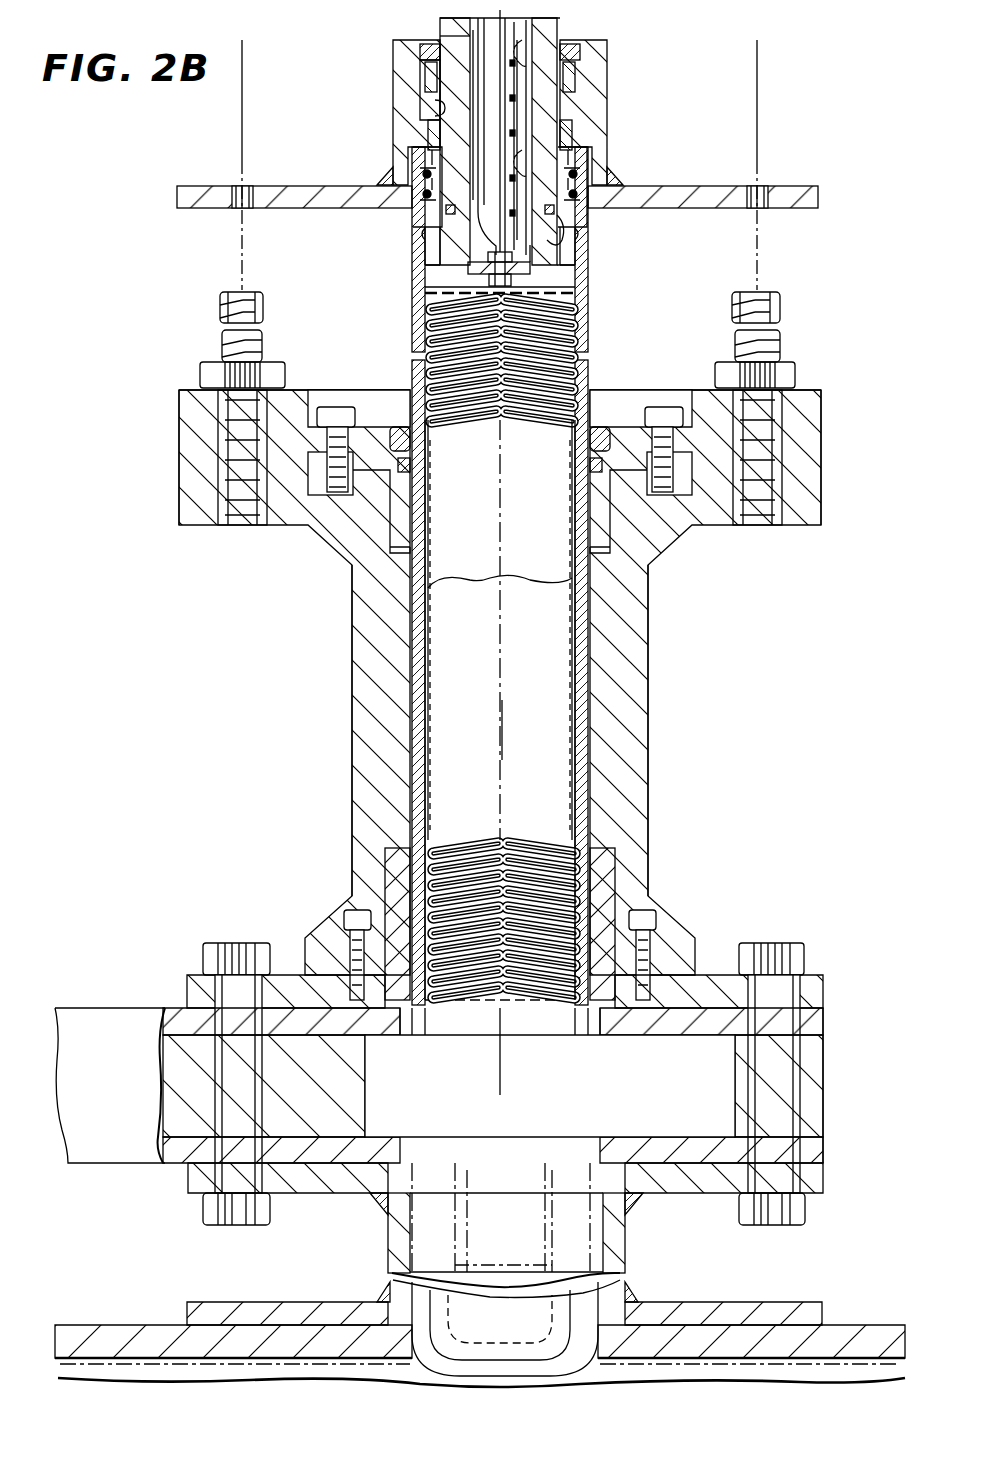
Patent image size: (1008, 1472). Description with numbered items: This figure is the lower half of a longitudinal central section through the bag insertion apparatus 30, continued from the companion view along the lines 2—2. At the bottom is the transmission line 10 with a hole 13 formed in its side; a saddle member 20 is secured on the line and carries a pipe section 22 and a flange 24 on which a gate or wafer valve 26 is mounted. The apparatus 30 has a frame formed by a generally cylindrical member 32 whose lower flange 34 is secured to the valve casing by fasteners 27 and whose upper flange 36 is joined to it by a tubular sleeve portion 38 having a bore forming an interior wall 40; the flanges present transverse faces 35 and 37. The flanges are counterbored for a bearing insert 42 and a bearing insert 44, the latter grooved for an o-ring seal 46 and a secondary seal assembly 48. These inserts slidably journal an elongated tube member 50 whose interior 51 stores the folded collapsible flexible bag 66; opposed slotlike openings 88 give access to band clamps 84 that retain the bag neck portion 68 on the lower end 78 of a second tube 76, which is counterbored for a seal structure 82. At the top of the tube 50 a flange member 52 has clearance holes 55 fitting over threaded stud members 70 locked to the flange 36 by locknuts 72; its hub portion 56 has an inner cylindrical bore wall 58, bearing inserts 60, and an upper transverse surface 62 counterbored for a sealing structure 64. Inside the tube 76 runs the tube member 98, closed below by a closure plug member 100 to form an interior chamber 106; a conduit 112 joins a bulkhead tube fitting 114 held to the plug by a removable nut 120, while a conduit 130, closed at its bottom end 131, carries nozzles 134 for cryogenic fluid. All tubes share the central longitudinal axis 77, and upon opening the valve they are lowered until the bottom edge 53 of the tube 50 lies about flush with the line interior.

The lines 2— 2 is at (592, 18).
The transmission line 10 is at (852, 1325).
The hole 13 is at (600, 1305).
The saddle member 20 is at (760, 1302).
The pipe section 22 is at (625, 1240).
The flange 24 is at (823, 1175).
The gate or wafer valve 26 is at (108, 1008).
The fasteners 27 is at (250, 943).
The bag insertion apparatus 30 is at (640, 104).
The cylindrical member (frame casing) 32 is at (652, 730).
The flange 34 is at (823, 975).
The transverse face 35 is at (823, 1018).
The flange 36 is at (821, 440).
The transverse face 37 is at (810, 390).
The tubular sleeve portion 38 is at (648, 656).
The interior wall 40 is at (590, 755).
The bearing insert 42 is at (600, 892).
The bearing insert 44 is at (648, 565).
The o-ring seal 46 is at (592, 465).
The secondary seal assembly 48 is at (604, 427).
The tube member 50 is at (412, 232).
The interior 51 is at (532, 664).
The flange member 52 is at (300, 186).
The bottom edge 53 is at (552, 1008).
The clearance holes 55 is at (232, 186).
The hub portion 56 is at (555, 72).
The inner cylindrical bore wall 58 is at (435, 105).
The bearing inserts 60 is at (470, 68).
The upper transverse surface 62 is at (607, 44).
The sealing structure 64 is at (420, 56).
The collapsible flexible bag 66 is at (590, 328).
The neck portion 68 is at (575, 205).
The threaded stud members 70 is at (222, 300).
The locknuts 72 is at (288, 362).
The tube (second elongated tube) 76 is at (555, 108).
The central longitudinal axis 77 is at (504, 740).
The lower end 78 is at (560, 234).
The seal structure 82 is at (445, 210).
The band clamps 84 is at (420, 190).
The slotlike openings 88 is at (500, 591).
The tube member 98 is at (440, 36).
The closure plug member 100 is at (530, 276).
The interior chamber 106 is at (420, 52).
The conduit 112 is at (470, 240).
The bulkhead tube fitting 114 is at (480, 283).
The removable nut 120 is at (478, 293).
The conduit 130 is at (590, 50).
The bottom end 131 is at (540, 248).
The nozzles 134 is at (565, 68).